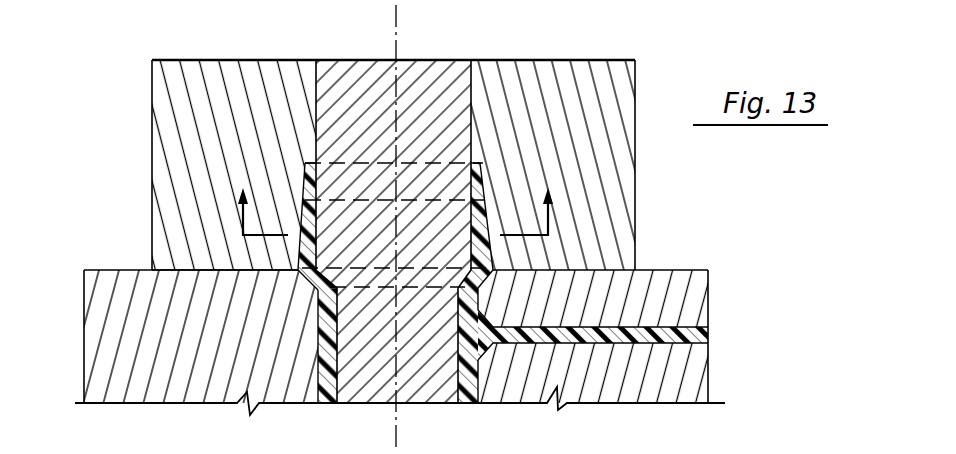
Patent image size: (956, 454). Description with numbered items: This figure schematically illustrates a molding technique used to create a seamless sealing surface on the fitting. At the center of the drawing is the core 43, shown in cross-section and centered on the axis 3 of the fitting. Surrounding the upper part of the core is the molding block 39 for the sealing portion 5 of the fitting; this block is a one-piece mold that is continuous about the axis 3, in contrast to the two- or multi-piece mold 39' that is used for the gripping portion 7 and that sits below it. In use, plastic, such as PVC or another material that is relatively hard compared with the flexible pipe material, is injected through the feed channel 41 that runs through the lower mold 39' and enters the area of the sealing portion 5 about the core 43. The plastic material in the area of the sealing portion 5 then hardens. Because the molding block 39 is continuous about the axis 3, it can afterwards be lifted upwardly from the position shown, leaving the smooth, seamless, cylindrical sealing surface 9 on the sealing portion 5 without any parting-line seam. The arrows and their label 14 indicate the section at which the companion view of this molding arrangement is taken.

The axis 3 is at (394, 42).
The sealing portion 5 is at (292, 206).
The gripping portion 7 is at (305, 349).
The cylindrical sealing surface 9 is at (493, 207).
The section line of FIG. 14 is at (398, 228).
The molding block 39 is at (431, 146).
The two or multi-piece mold 39' is at (388, 315).
The feed channel 41 is at (667, 347).
The core 43 is at (410, 247).